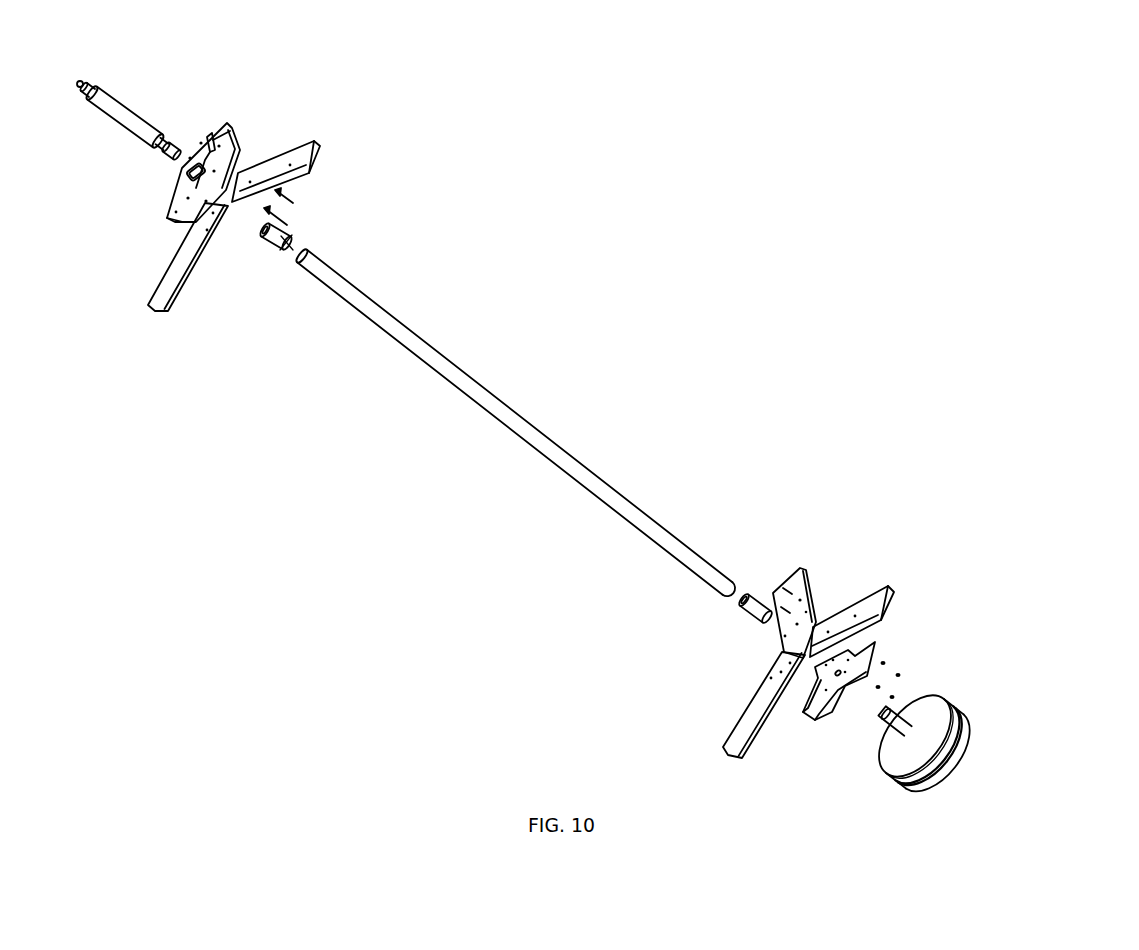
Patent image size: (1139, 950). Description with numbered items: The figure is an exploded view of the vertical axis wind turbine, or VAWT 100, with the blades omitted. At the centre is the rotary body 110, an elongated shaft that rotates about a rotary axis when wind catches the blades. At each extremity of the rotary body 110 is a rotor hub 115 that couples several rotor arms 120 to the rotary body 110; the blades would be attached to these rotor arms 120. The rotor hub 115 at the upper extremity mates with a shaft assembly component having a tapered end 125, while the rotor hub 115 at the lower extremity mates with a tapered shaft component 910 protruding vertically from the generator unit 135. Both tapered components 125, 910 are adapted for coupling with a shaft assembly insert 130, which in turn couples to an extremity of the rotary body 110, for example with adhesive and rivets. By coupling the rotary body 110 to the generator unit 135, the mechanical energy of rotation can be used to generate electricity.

The VAWT 100 is at (1017, 137).
The rotary body 110 is at (467, 385).
The rotor hub 115 is at (240, 158).
The rotor arm 120 is at (300, 142).
The shaft assembly component having a tapered end 125 is at (150, 125).
The shaft assembly insert 130 is at (293, 242).
The generator unit 135 is at (955, 720).
The tapered shaft component 910 is at (900, 710).